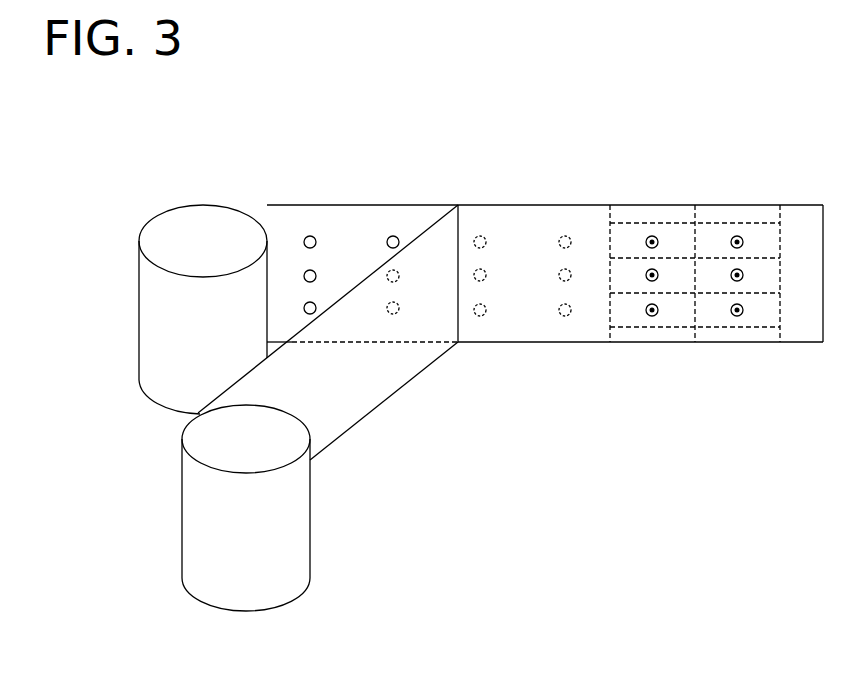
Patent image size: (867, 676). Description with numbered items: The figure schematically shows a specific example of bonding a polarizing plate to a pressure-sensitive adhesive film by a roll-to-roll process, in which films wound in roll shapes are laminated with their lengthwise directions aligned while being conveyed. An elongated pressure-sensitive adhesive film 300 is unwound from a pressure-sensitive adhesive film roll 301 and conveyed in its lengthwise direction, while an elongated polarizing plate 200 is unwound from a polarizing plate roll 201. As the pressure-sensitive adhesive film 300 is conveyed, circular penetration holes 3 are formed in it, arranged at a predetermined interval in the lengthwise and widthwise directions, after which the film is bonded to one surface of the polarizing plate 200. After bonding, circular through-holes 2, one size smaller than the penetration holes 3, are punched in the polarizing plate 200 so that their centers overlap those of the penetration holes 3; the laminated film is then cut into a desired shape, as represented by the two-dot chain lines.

The through-hole 2 is at (646, 308).
The penetration hole 3 is at (304, 304).
The polarizing plate 200 is at (383, 402).
The polarizing plate roll 201 is at (200, 515).
The pressure-sensitive adhesive film 300 is at (417, 216).
The pressure-sensitive adhesive film roll 301 is at (140, 282).